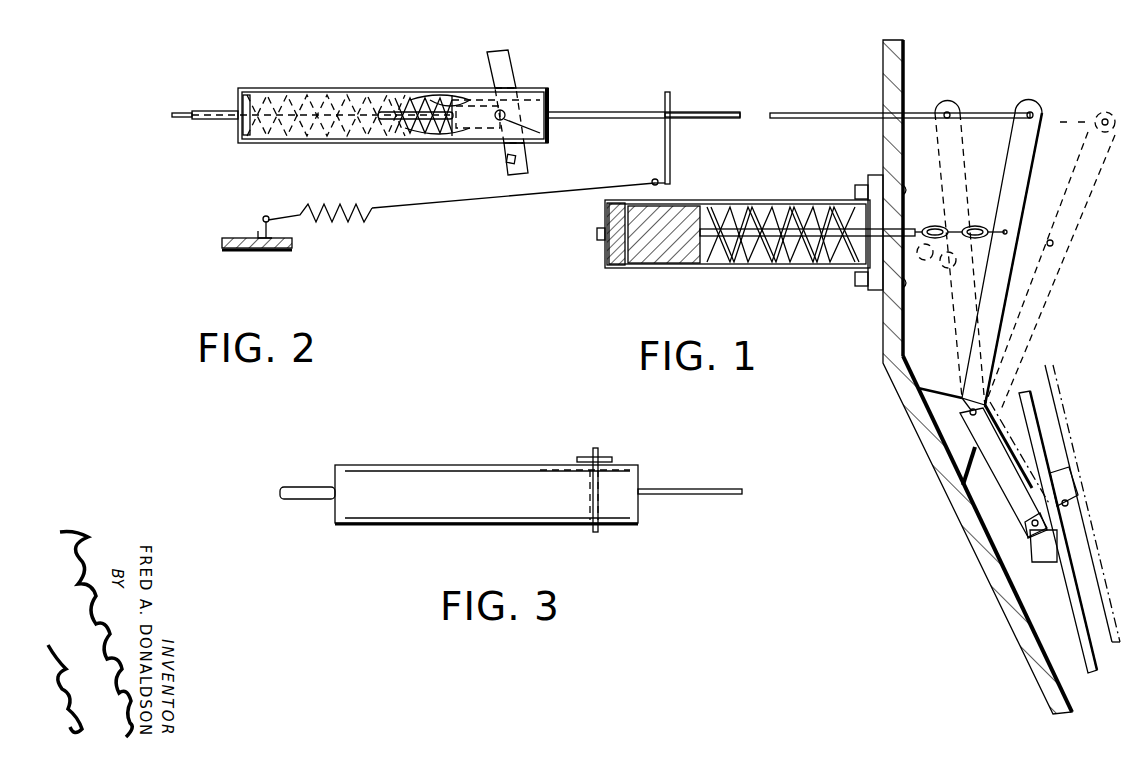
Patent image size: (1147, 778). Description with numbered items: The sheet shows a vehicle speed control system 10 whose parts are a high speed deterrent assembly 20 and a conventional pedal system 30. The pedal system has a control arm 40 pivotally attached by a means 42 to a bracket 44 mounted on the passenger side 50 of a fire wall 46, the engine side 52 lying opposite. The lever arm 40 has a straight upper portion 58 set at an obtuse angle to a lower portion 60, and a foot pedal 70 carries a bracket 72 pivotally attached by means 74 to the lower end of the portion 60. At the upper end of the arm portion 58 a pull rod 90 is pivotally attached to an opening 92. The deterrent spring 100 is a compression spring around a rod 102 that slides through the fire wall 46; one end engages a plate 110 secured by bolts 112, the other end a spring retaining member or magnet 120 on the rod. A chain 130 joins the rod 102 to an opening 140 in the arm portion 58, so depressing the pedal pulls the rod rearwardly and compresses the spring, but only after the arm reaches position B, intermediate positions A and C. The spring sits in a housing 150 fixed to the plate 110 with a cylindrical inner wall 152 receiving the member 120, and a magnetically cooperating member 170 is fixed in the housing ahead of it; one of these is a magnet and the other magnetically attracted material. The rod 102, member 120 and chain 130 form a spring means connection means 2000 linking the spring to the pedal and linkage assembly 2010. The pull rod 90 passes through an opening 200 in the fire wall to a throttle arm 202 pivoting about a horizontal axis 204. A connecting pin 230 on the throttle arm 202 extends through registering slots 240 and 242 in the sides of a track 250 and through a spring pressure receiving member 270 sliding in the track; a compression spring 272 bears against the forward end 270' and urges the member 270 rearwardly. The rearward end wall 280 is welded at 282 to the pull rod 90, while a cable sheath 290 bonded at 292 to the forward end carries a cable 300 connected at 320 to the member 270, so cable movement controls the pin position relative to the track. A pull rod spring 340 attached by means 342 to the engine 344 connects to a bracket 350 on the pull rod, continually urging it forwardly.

In FIG. 1, the speed control system 10 is at (805, 152).
In FIG. 1, the high speed deterrent assembly 20 is at (770, 200).
In FIG. 1, the pedal system 30 is at (1005, 350).
In FIG. 1, the control arm 40 is at (1000, 332).
In FIG. 1, the pivot means 42 is at (960, 390).
In FIG. 1, the bracket 44 is at (966, 483).
In FIG. 1, the fire wall 46 is at (875, 150).
In FIG. 1, the passenger side 50 is at (1030, 546).
In FIG. 1, the engine side 52 is at (937, 553).
In FIG. 1, the upper portion 58 is at (1028, 182).
In FIG. 1, the lower portion 60 is at (1020, 515).
In FIG. 1, the foot pedal 70 is at (1065, 600).
In FIG. 1, the bracket 72 is at (1045, 563).
In FIG. 1, the pivot means 74 is at (1068, 485).
In FIG. 2, the pull rod 90 is at (700, 112).
In FIG. 1, the pull rod 90 is at (820, 98).
In FIG. 1, the opening 92 is at (1040, 100).
In FIG. 1, the high speed deterrent spring 100 is at (785, 210).
In FIG. 1, the rod 102 is at (825, 225).
In FIG. 1, the plate 110 is at (875, 175).
In FIG. 1, the bolts 112 is at (910, 280).
In FIG. 1, the spring retaining member 120 is at (665, 255).
In FIG. 1, the chain 130 is at (932, 222).
In FIG. 1, the opening 140 is at (1000, 225).
In FIG. 1, the housing 150 is at (725, 268).
In FIG. 1, the cylindrical inner wall 152 is at (840, 268).
In FIG. 1, the magnetically cooperating member 170 is at (615, 268).
In FIG. 1, the opening 200 is at (880, 105).
In FIG. 2, the throttle arm 202 is at (508, 52).
In FIG. 3, the throttle arm 202 is at (612, 458).
In FIG. 2, the horizontal axis 204 is at (509, 163).
In FIG. 2, the connecting pin 230 is at (550, 135).
In FIG. 3, the connecting pin 230 is at (598, 448).
In FIG. 2, the slot 240 is at (405, 95).
In FIG. 3, the slot 240 is at (585, 522).
In FIG. 2, the slot 242 is at (430, 92).
In FIG. 3, the slot 242 is at (568, 465).
In FIG. 2, the track 250 is at (328, 90).
In FIG. 2, the spring pressure receiving member 270 is at (406, 104).
In FIG. 2, the forward end 270' is at (244, 152).
In FIG. 2, the compression spring 272 is at (270, 130).
In FIG. 2, the rearward end wall 280 is at (550, 120).
In FIG. 2, the weld 282 is at (555, 110).
In FIG. 2, the cable sheath 290 is at (215, 120).
In FIG. 2, the bond 292 is at (270, 75).
In FIG. 2, the cable 300 is at (185, 110).
In FIG. 2, the cable connection 320 is at (450, 136).
In FIG. 2, the pull rod spring 340 is at (368, 214).
In FIG. 2, the attaching means 342 is at (258, 226).
In FIG. 2, the engine 344 is at (292, 246).
In FIG. 2, the bracket 350 is at (672, 145).
In FIG. 1, the spring means connection means 2000 is at (800, 250).
In FIG. 1, the pedal and linkage assembly 2010 is at (975, 302).
In FIG. 1, the arm position A is at (940, 157).
In FIG. 1, the arm position B is at (1005, 157).
In FIG. 1, the arm position C is at (1078, 155).